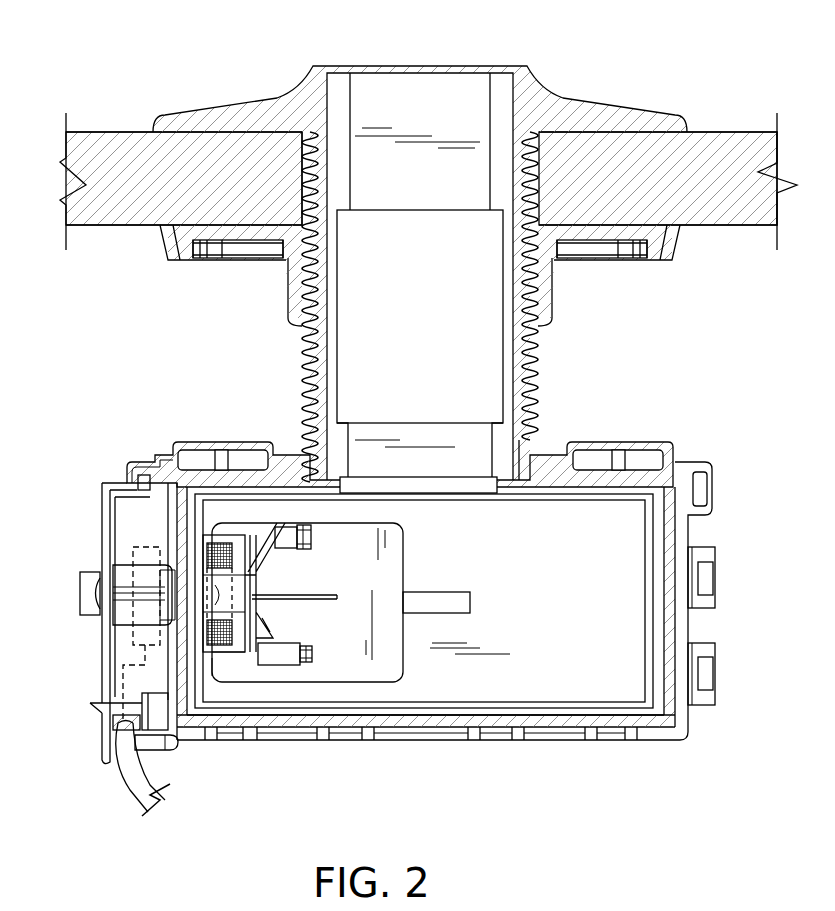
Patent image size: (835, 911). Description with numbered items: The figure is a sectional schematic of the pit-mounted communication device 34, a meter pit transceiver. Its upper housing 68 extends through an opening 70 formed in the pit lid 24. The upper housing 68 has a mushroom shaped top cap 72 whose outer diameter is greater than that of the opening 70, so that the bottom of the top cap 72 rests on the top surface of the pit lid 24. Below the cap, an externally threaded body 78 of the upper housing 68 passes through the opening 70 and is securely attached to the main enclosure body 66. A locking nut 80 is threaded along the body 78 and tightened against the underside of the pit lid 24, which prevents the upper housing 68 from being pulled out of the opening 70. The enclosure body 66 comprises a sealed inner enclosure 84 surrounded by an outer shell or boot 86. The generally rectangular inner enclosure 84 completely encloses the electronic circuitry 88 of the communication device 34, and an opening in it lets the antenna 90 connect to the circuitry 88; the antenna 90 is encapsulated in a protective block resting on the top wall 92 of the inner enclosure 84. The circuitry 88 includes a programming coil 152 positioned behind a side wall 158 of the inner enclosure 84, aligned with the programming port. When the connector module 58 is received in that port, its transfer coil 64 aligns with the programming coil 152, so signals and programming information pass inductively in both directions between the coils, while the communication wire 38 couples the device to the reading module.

The pit lid 24 is at (92, 138).
The communication device 34 is at (710, 430).
The communication wire 38 is at (138, 795).
The connector module 58 is at (80, 508).
The transfer coil 64 is at (140, 545).
The main enclosure body 66 is at (424, 772).
The upper housing 68 is at (296, 381).
The opening 70 is at (573, 128).
The top cap 72 is at (272, 100).
The externally threaded body 78 is at (537, 370).
The locking nut 80 is at (165, 242).
The inner enclosure 84 is at (553, 722).
The outer shell or boot 86 is at (663, 730).
The electronic circuitry 88 is at (422, 546).
The antenna 90 is at (455, 88).
The top wall 92 is at (551, 484).
The programming coil 152 is at (218, 543).
The side wall 158 is at (655, 688).